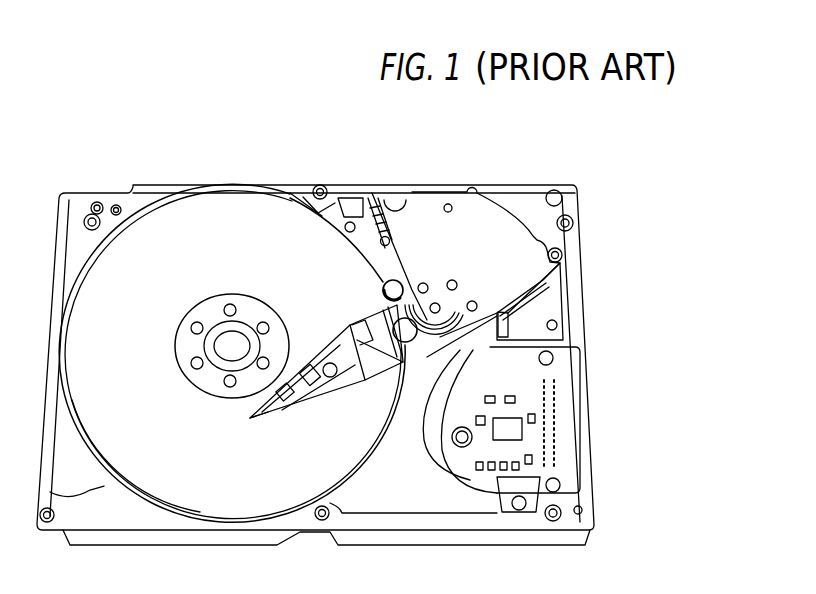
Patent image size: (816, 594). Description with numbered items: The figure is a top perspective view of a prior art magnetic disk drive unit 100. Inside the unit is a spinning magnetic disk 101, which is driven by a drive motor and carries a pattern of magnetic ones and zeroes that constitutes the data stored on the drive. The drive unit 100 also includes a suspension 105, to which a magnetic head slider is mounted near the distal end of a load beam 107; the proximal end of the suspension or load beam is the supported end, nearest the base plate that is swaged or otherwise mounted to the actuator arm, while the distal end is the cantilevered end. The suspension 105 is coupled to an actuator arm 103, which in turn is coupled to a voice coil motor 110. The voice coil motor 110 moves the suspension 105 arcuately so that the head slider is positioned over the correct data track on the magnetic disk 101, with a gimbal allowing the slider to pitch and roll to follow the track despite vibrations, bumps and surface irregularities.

The magnetic disk drive unit 100 is at (237, 160).
The magnetic disk 101 is at (193, 225).
The actuator arm 103 is at (417, 347).
The suspension 105 is at (280, 428).
The load beam 107 is at (313, 365).
The voice coil motor 110 is at (462, 253).